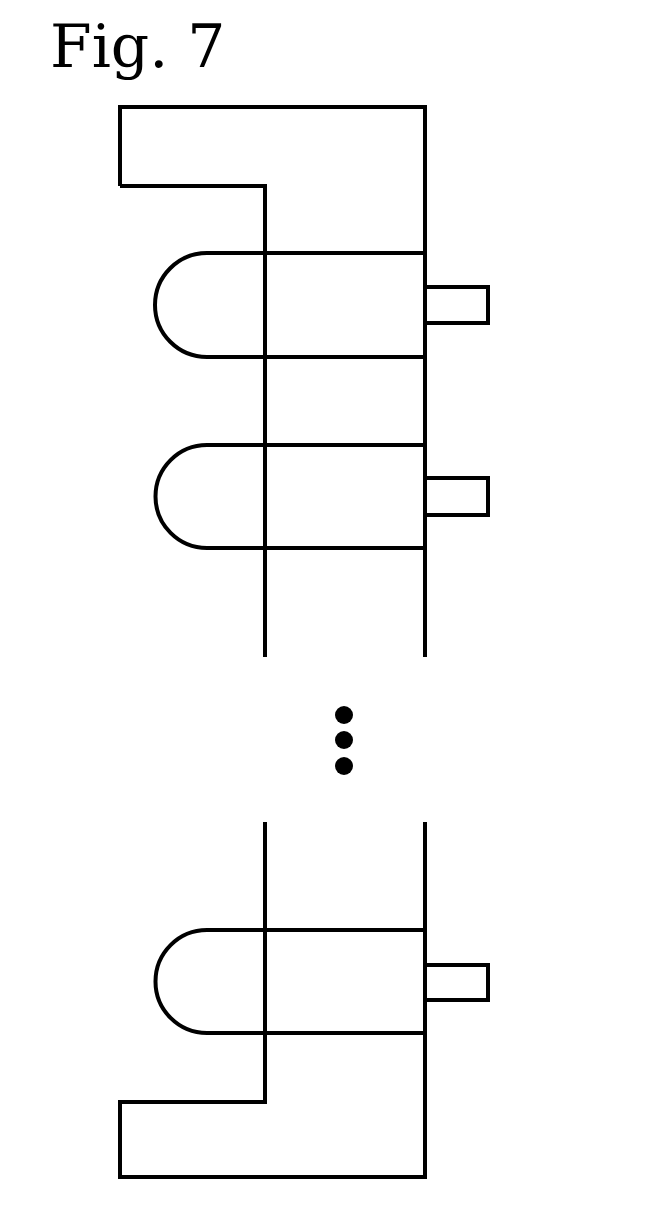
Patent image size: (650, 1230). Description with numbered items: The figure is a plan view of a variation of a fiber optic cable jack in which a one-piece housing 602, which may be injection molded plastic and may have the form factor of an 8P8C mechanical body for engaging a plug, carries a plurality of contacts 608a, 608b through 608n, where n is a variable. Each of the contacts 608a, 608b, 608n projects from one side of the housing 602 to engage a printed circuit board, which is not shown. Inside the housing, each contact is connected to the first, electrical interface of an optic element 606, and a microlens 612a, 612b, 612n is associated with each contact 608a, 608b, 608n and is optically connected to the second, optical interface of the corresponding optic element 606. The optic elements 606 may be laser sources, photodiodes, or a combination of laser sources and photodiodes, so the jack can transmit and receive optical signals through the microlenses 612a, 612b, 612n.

The one-piece housing 602 is at (272, 642).
The optic element 606 is at (345, 643).
The contact 608a is at (455, 287).
The contact 608b is at (455, 478).
The contact 608n is at (455, 965).
The microlens 612a is at (210, 305).
The microlens 612b is at (210, 496).
The microlens 612n is at (210, 981).